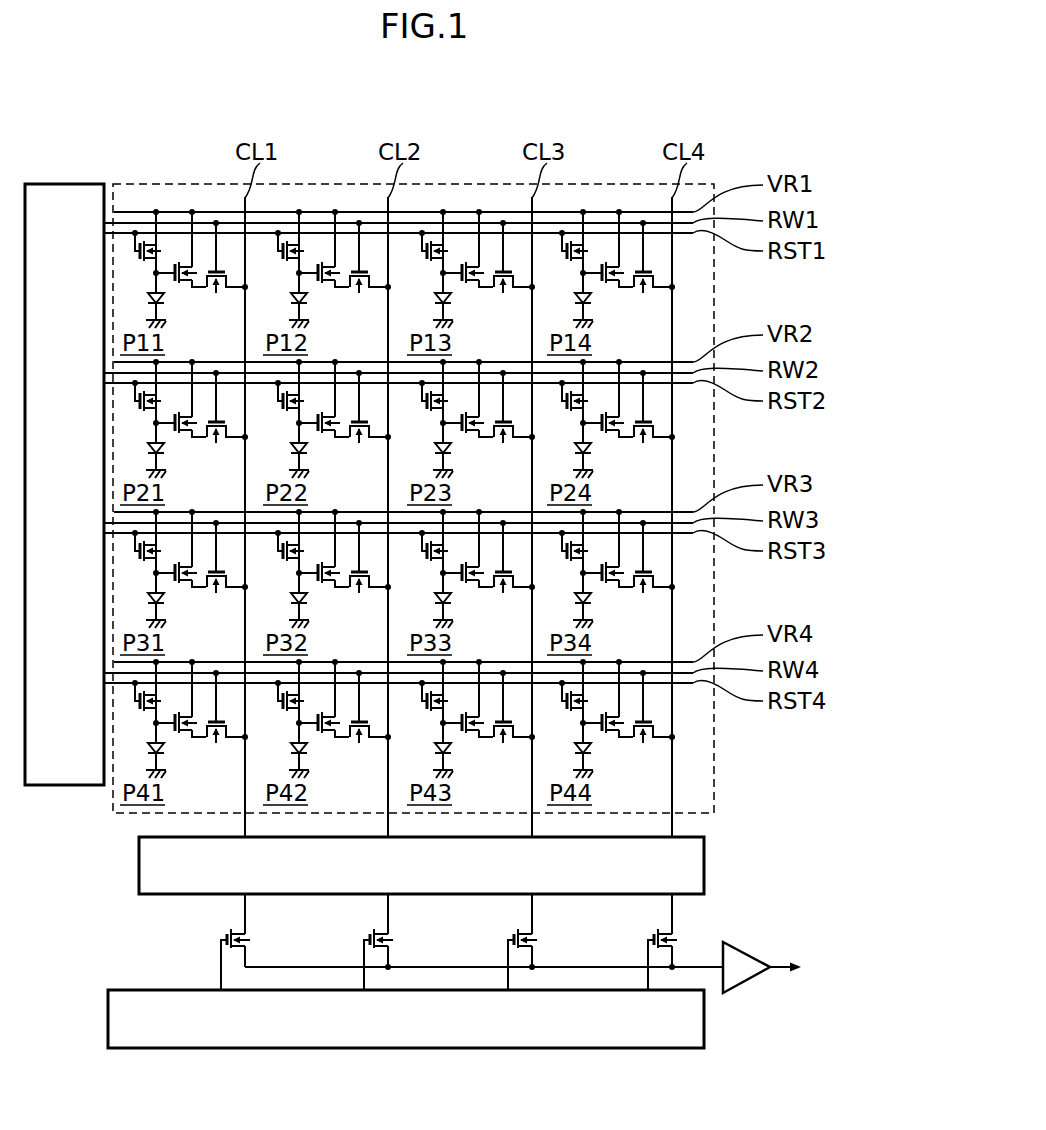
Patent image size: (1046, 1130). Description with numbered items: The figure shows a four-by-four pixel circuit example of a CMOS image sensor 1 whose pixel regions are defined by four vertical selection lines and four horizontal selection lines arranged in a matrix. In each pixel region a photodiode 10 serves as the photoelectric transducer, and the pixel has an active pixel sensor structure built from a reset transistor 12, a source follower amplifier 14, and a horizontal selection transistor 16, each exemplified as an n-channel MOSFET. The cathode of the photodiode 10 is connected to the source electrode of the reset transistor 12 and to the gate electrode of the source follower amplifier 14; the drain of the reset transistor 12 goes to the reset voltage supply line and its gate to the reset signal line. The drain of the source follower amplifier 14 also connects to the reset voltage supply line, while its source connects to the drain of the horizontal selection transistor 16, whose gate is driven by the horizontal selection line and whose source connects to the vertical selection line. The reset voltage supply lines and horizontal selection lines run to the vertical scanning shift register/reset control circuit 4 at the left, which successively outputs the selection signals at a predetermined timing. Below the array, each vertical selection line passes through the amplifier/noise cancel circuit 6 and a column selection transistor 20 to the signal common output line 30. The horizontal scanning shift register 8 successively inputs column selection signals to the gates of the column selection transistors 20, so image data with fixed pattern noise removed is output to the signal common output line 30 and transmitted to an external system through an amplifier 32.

The CMOS image sensor 1 is at (607, 139).
The vertical scanning shift register/reset control circuit 4 is at (70, 184).
The amplifier/noise cancel circuit 6 is at (705, 868).
The horizontal scanning shift register 8 is at (108, 1020).
The photodiode 10 is at (165, 297).
The reset transistor 12 is at (148, 264).
The source follower amplifier 14 is at (188, 283).
The horizontal selection transistor 16 is at (225, 294).
The column selection transistor 20 is at (710, 928).
The signal common output line 30 is at (711, 970).
The amplifier 32 is at (756, 981).